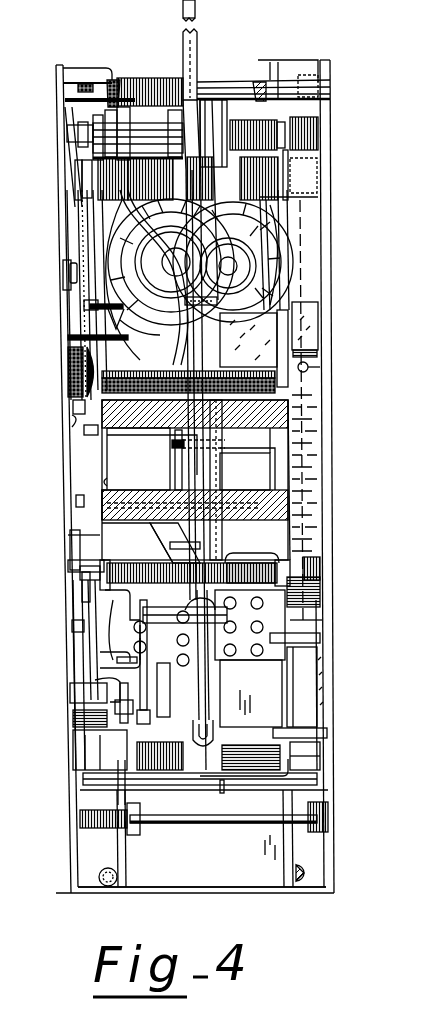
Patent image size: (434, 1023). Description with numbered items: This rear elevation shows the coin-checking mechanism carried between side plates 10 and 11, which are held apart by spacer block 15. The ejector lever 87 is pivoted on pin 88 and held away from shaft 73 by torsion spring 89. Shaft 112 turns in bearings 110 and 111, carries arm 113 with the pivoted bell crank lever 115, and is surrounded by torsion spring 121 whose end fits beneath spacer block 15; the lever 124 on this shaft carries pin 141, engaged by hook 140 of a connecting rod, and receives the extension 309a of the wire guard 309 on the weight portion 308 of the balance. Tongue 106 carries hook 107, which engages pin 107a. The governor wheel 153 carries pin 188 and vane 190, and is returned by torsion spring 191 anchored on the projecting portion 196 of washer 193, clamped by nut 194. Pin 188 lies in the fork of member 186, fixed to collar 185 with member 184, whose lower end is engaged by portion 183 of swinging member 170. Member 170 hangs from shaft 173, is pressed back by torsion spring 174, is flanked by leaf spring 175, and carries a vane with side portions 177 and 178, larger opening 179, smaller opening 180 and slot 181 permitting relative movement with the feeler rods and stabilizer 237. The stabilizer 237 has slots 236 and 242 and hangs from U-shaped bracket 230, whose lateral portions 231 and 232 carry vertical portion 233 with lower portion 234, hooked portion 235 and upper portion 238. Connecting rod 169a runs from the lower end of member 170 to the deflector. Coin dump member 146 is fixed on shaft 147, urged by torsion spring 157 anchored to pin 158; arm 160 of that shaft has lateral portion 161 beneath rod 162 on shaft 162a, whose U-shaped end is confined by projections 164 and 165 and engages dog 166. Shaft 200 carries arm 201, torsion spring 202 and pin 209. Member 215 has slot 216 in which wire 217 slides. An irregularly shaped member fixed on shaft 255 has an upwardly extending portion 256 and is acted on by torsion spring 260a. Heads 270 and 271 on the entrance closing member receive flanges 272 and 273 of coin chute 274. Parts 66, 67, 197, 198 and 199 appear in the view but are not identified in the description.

The side plate 10 is at (58, 62).
The side plate 11 is at (323, 62).
The spacer block 15 is at (80, 68).
The ejector lever 87 is at (196, 9).
The pin 88 is at (240, 86).
The torsion spring 89 is at (176, 64).
The collar 185 is at (158, 66).
The member 184 is at (183, 136).
The shaft 173 is at (65, 110).
The torsion spring 174 is at (260, 122).
The bearing 110 is at (62, 178).
The bearing 111 is at (322, 168).
The shaft 112 is at (320, 197).
The torsion spring 121 is at (96, 205).
The forwardly and downwardly projecting member 186 is at (160, 268).
The shaft 73 is at (190, 256).
The downwardly and rearwardly projecting tongue 106 is at (96, 237).
The hook 140 is at (64, 270).
The pin 141 is at (70, 283).
The lever 124 is at (60, 633).
The hook 107 is at (90, 328).
The pin 107a is at (124, 320).
The inwardly projecting portion 196 is at (68, 358).
The gear wheel 66 is at (239, 214).
The spoke 67 is at (256, 244).
The swinging member 170 is at (228, 266).
The rearwardly and laterally projecting portion 183 is at (246, 290).
The arm 113 is at (266, 224).
The bell crank lever 115 is at (272, 240).
The wheel 153 is at (306, 252).
The vane 190 is at (276, 310).
The leaf spring 175 is at (210, 346).
The torsion spring 191 is at (130, 370).
The bracket 197 is at (312, 325).
The plate 198 is at (320, 353).
The screw 199 is at (325, 368).
The opening 179 is at (195, 480).
The opening 180 is at (247, 459).
The side portion 177 is at (280, 471).
The rectangular wire member 309 is at (136, 438).
The extension 309a is at (76, 500).
The pin 188 is at (172, 443).
The weight portion 308 is at (180, 478).
The side portion 178 is at (107, 482).
The nut 194 is at (76, 406).
The washer 193 is at (76, 420).
The torsion spring 157 is at (130, 552).
The elongated slot 181 is at (176, 545).
The slot 242 is at (228, 533).
The laterally projecting portion 238 is at (250, 553).
The arm 160 is at (82, 555).
The rotatable shaft 147 is at (82, 568).
The coin dump member 146 is at (76, 611).
The laterally and inwardly projecting portion 161 is at (130, 598).
The stabilizer 237 is at (209, 672).
The connecting rod 169a is at (248, 632).
The lower projection 165 is at (116, 652).
The rod member 162 is at (138, 665).
The shaft 162a is at (240, 716).
The dog 166 is at (112, 683).
The slot 216 is at (104, 704).
The upper projection 164 is at (118, 698).
The laterally disposed pin 209 is at (122, 714).
The slot 236 is at (212, 725).
The member 215 is at (75, 716).
The elongated wire 217 is at (80, 748).
The upwardly projecting portion 235 is at (236, 753).
The pin 158 is at (323, 607).
The laterally projecting portion 232 is at (302, 637).
The vertically disposed portion 233 is at (286, 684).
The U-shaped bracket 230 is at (322, 697).
The laterally projecting portion 231 is at (326, 733).
The shaft 255 is at (313, 752).
The upwardly and rearwardly extending portion 256 is at (112, 765).
The laterally projecting portion 234 is at (266, 786).
The arm 201 is at (128, 802).
The torsion spring 260a is at (204, 793).
The torsion spring 202 is at (110, 810).
The shaft 200 is at (300, 822).
The flange 273 is at (122, 870).
The flange 272 is at (285, 870).
The head 270 is at (108, 866).
The head 271 is at (300, 866).
The coin chute 274 is at (200, 890).